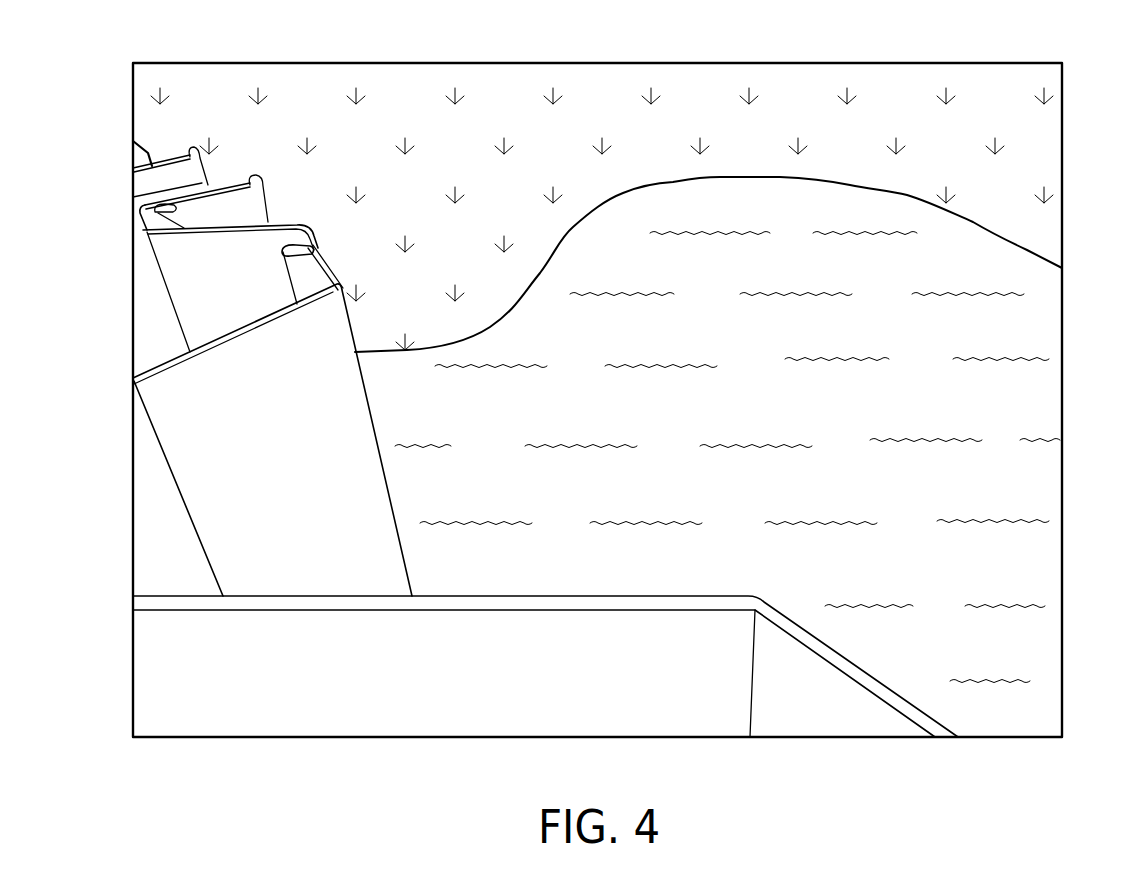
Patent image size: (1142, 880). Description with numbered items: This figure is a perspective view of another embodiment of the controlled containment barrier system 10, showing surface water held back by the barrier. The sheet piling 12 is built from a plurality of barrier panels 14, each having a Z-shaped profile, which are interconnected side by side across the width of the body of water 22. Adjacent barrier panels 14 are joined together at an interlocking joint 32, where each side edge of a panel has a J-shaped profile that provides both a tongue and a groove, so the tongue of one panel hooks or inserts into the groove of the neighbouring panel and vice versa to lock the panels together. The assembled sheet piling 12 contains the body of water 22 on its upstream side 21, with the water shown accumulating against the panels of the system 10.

The controlled containment barrier system 10 is at (262, 39).
The sheet piling 12 is at (813, 690).
The barrier panel 14 is at (197, 247).
The upstream side 21 is at (518, 108).
The body of water 22 is at (927, 485).
The interlocking joint 32 is at (293, 265).